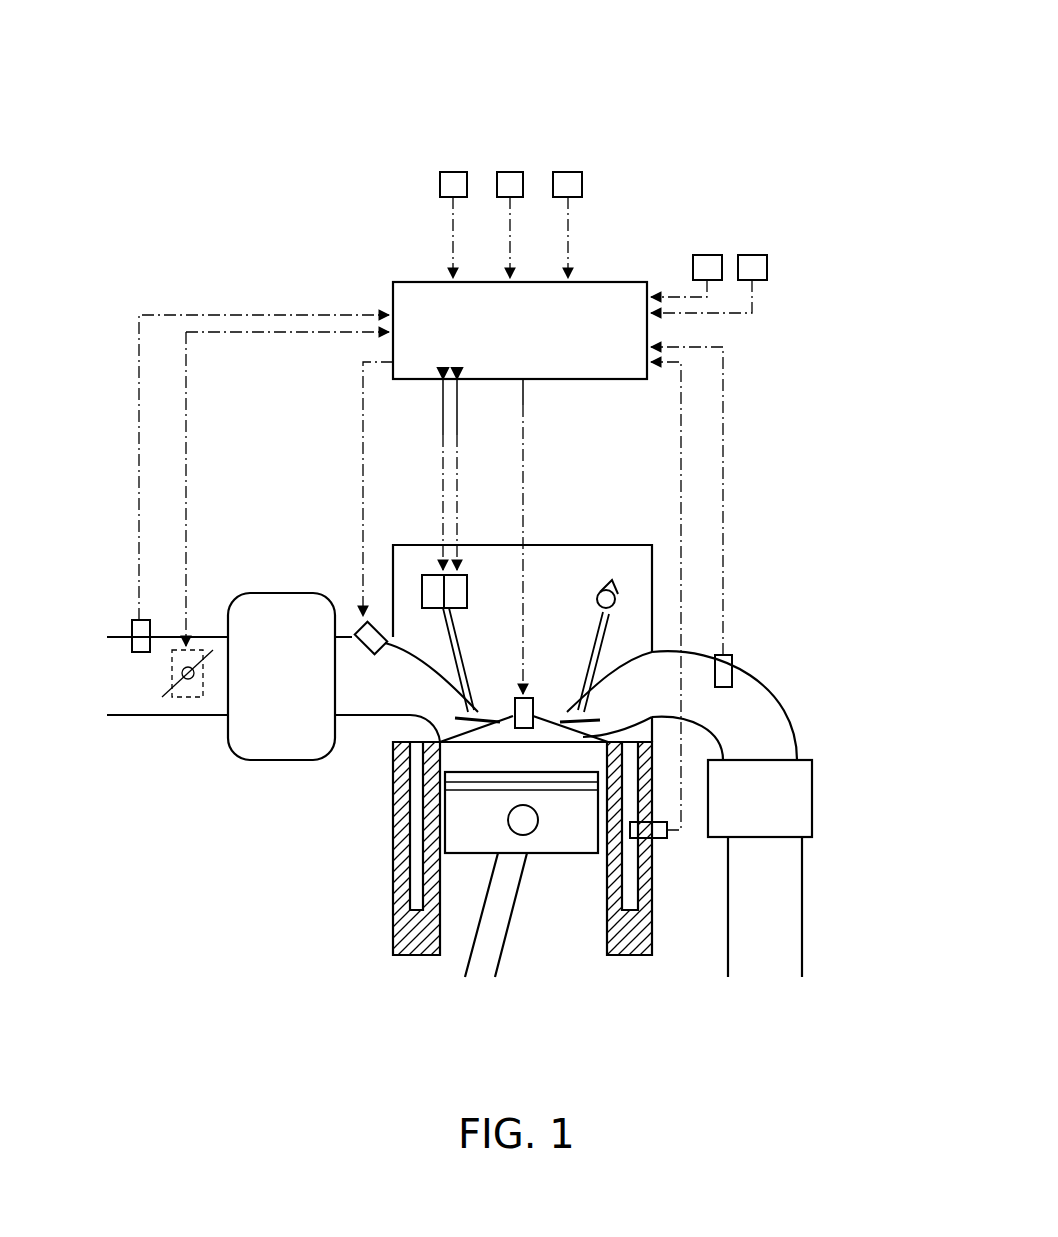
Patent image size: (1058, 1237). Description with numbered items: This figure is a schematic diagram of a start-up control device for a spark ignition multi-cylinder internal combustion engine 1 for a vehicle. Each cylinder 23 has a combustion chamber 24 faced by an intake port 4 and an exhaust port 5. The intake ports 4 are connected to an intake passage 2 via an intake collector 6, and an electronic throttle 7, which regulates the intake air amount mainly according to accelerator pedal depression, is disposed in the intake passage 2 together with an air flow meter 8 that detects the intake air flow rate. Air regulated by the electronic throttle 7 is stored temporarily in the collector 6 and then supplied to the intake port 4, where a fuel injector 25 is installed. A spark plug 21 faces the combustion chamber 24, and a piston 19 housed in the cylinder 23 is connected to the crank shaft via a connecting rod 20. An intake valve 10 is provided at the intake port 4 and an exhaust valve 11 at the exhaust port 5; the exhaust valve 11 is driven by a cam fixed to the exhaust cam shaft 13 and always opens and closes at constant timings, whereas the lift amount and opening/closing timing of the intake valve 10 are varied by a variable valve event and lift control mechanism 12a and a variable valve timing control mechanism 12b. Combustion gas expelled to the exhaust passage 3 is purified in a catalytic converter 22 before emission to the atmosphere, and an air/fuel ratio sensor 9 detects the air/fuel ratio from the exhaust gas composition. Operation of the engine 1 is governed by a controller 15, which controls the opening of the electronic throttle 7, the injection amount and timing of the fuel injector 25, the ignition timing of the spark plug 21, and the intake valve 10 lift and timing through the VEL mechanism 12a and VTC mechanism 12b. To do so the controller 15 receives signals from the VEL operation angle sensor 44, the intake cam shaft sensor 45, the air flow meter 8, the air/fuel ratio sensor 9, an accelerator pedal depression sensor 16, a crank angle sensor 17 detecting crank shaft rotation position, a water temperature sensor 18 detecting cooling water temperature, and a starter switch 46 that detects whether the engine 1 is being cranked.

The internal combustion engine 1 is at (378, 898).
The intake passage 2 is at (130, 720).
The exhaust passage 3 is at (802, 915).
The intake port 4 is at (410, 707).
The exhaust port 5 is at (653, 652).
The intake collector 6 is at (272, 760).
The electronic throttle 7 is at (183, 697).
The air flow meter 8 is at (133, 628).
The air/fuel ratio sensor 9 is at (732, 670).
The intake valve 10 is at (458, 628).
The exhaust valve 11 is at (592, 652).
The variable valve event and lift control (VEL) mechanism 12a is at (428, 575).
The variable valve timing control (VTC) mechanism 12b is at (470, 575).
The exhaust cam shaft 13 is at (613, 590).
The controller 15 is at (420, 282).
The accelerator pedal depression sensor 16 is at (752, 255).
The crank angle sensor 17 is at (700, 255).
The water temperature sensor 18 is at (655, 840).
The piston 19 is at (568, 832).
The connecting rod 20 is at (506, 948).
The spark plug 21 is at (527, 698).
The catalytic converter 22 is at (812, 805).
The cylinder 23 is at (463, 908).
The combustion chamber 24 is at (498, 735).
The fuel injector 25 is at (360, 628).
The VEL operation angle sensor 44 is at (509, 172).
The intake cam shaft sensor 45 is at (568, 172).
The starter switch 46 is at (450, 172).